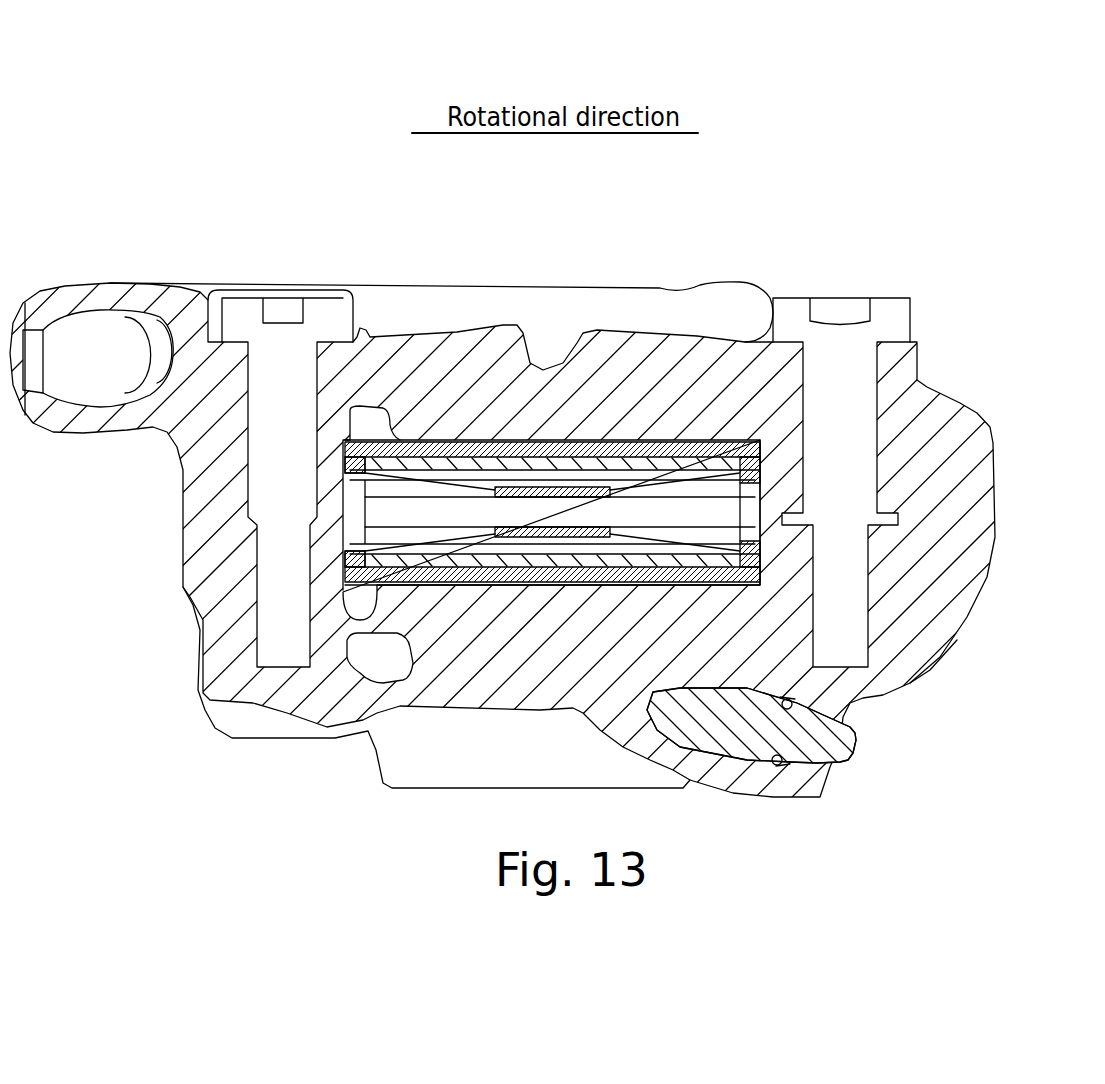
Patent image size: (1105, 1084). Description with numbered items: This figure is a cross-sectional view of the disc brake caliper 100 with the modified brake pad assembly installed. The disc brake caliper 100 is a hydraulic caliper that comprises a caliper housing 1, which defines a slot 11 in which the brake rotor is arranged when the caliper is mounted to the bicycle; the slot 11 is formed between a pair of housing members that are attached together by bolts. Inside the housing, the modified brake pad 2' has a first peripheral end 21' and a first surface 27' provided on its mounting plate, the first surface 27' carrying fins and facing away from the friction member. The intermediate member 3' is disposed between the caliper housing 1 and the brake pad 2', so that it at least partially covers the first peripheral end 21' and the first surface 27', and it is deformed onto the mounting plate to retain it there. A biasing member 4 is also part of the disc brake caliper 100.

The disc brake caliper 100 is at (818, 236).
The caliper housing 1 is at (185, 499).
The intermediate member 3' is at (504, 378).
The first peripheral end 21' is at (555, 374).
The modified brake pad 2' is at (552, 380).
The biasing member 4 is at (580, 487).
The first surface 27' is at (552, 412).
The slot 11 is at (760, 500).